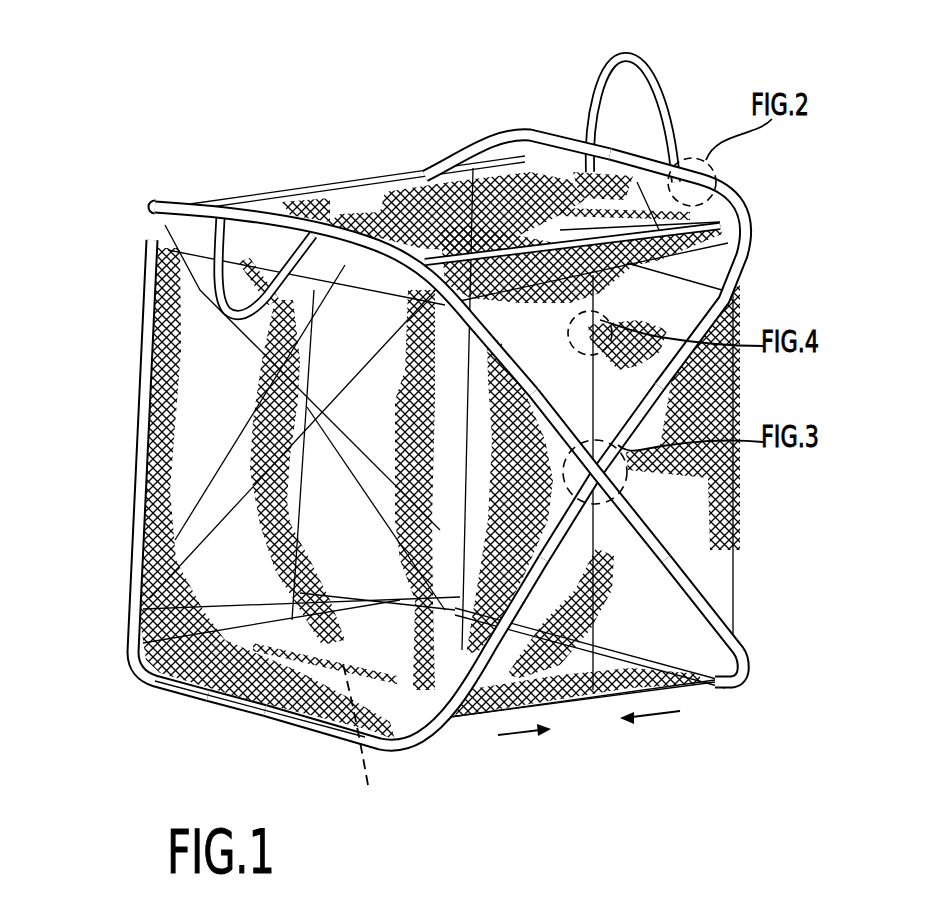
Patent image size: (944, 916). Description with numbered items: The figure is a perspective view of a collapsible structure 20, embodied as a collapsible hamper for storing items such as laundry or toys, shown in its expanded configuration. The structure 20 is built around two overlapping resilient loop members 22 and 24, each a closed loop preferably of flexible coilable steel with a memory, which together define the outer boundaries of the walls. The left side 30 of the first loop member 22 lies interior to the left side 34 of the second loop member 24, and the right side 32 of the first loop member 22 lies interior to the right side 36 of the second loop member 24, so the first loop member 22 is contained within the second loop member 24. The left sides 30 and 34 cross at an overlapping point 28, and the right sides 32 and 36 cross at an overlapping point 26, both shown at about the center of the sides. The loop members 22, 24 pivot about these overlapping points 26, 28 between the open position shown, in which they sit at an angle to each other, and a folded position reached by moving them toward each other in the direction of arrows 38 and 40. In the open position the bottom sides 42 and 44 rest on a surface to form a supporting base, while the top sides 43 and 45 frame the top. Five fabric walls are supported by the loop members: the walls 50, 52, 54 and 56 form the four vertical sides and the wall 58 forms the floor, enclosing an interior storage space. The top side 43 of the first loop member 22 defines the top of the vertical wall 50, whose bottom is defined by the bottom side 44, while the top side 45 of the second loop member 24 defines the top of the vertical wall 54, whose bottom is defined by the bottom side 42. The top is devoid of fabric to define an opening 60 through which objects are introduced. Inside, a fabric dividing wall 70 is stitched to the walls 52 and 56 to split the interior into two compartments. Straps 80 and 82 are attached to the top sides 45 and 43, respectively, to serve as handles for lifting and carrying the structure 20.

The collapsible structure 20 is at (140, 98).
The first loop member 22 is at (770, 650).
The second loop member 24 is at (430, 754).
The overlapping point 26 is at (603, 480).
The overlapping point 28 is at (275, 405).
The left side of first loop member 30 is at (158, 243).
The right side of first loop member 32 is at (700, 598).
The left side of second loop member 34 is at (128, 606).
The right side of second loop member 36 is at (690, 297).
The arrow 38 is at (500, 737).
The arrow 40 is at (655, 712).
The bottom side of first loop member 42 is at (705, 687).
The top side of first loop member 43 is at (200, 200).
The bottom side of second loop member 44 is at (250, 710).
The top side of second loop member 45 is at (738, 198).
The fabric wall 50 is at (153, 430).
The fabric wall 52 is at (555, 704).
The fabric wall 54 is at (620, 186).
The fabric wall 56 is at (298, 192).
The bottom wall 58 is at (359, 740).
The opening 60 is at (511, 170).
The dividing wall 70 is at (398, 186).
The strap 80 is at (655, 78).
The strap 82 is at (218, 293).